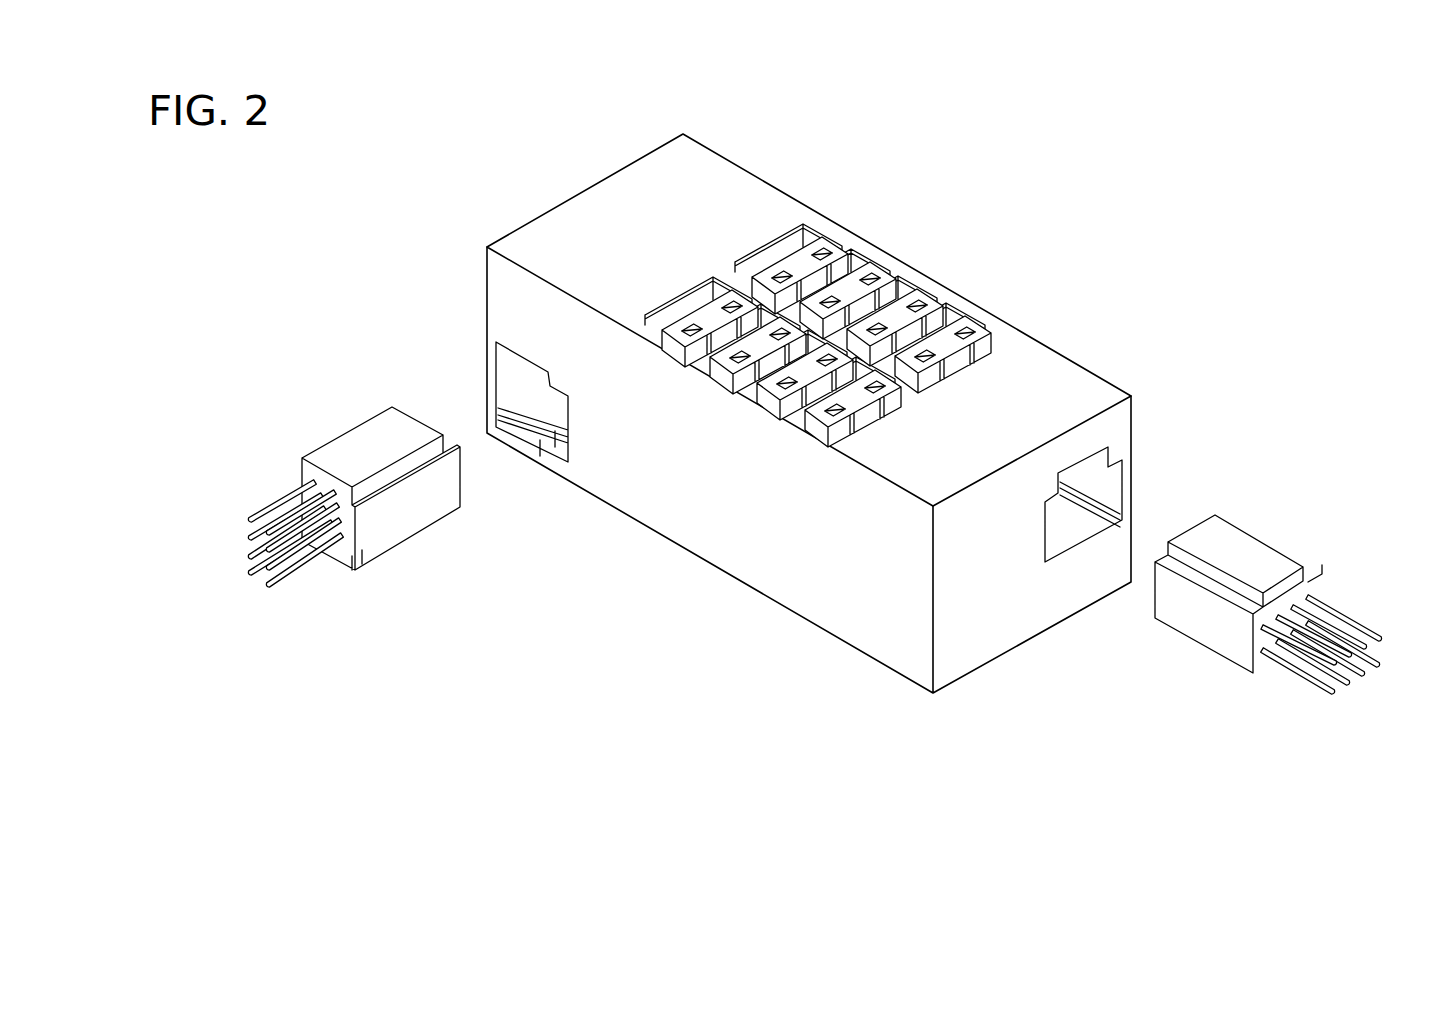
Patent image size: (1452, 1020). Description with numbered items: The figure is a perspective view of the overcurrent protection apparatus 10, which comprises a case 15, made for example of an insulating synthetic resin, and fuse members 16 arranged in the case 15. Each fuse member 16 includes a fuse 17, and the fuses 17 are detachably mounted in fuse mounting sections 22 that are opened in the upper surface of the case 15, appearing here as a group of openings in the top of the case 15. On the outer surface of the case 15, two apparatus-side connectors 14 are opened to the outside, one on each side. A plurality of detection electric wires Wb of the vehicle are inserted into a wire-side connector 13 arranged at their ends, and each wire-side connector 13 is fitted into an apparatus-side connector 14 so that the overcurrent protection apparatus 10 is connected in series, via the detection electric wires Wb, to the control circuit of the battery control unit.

The overcurrent protection apparatus 10 is at (787, 377).
The wire-side connector 13 is at (354, 440).
The apparatus-side connector 14 is at (513, 373).
The case 15 is at (762, 193).
The fuse member 16 is at (799, 411).
The fuse 17 is at (883, 283).
The fuse mounting section 22 is at (680, 310).
The detection electric wire Wb is at (250, 557).